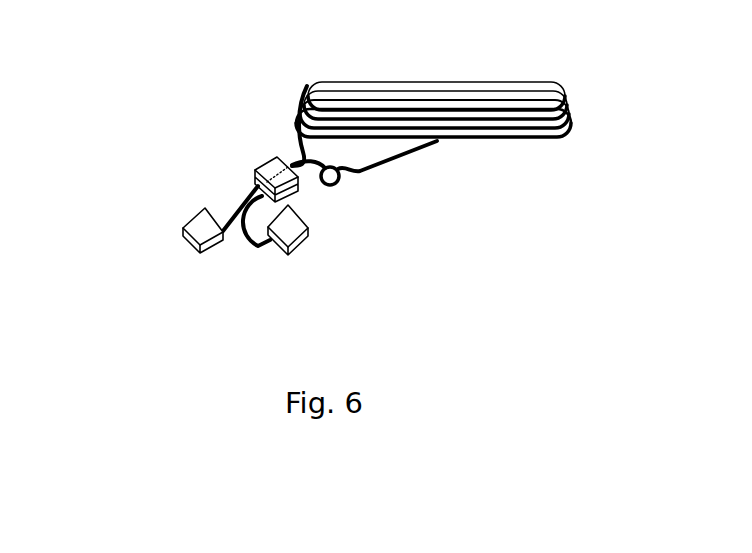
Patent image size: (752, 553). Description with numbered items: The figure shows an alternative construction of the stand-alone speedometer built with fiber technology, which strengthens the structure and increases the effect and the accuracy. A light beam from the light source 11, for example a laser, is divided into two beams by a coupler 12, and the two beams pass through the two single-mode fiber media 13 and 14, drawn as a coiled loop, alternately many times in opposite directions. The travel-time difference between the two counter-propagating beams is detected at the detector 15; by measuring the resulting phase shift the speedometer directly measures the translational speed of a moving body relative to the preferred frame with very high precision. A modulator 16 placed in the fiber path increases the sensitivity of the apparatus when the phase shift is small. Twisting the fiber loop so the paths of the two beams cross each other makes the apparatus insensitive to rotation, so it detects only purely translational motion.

The light source 11 is at (201, 241).
The coupler 12 is at (286, 135).
The single-mode fiber medium 13 is at (470, 83).
The single-mode fiber medium 14 is at (502, 143).
The detector 15 is at (284, 252).
The modulator 16 is at (335, 186).